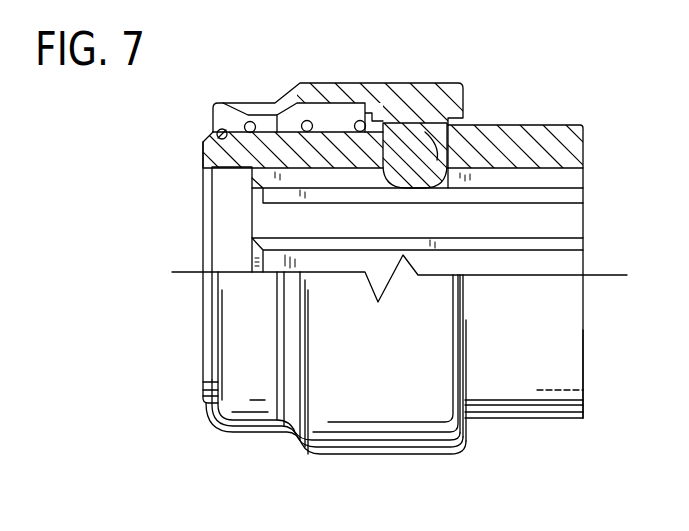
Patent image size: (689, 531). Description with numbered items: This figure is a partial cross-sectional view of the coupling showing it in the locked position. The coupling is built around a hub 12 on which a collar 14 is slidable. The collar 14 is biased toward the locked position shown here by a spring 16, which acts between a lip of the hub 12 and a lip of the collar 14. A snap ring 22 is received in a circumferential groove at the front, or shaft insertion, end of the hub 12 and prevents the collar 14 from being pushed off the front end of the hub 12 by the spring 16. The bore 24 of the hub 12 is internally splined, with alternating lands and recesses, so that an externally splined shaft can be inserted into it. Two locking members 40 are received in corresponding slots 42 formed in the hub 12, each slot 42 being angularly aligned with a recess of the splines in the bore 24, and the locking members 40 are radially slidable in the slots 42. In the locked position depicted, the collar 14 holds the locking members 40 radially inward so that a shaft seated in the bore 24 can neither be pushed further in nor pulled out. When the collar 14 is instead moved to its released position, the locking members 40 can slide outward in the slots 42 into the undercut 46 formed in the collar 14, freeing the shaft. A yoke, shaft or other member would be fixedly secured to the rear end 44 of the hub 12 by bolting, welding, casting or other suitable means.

The hub 12 is at (553, 125).
The collar 14 is at (420, 440).
The spring 16 is at (330, 108).
The snap ring 22 is at (210, 142).
The bore 24 is at (565, 220).
The locking member 40 is at (425, 130).
The slot 42 is at (425, 132).
The rear end 44 is at (585, 347).
The undercut 46 is at (338, 120).